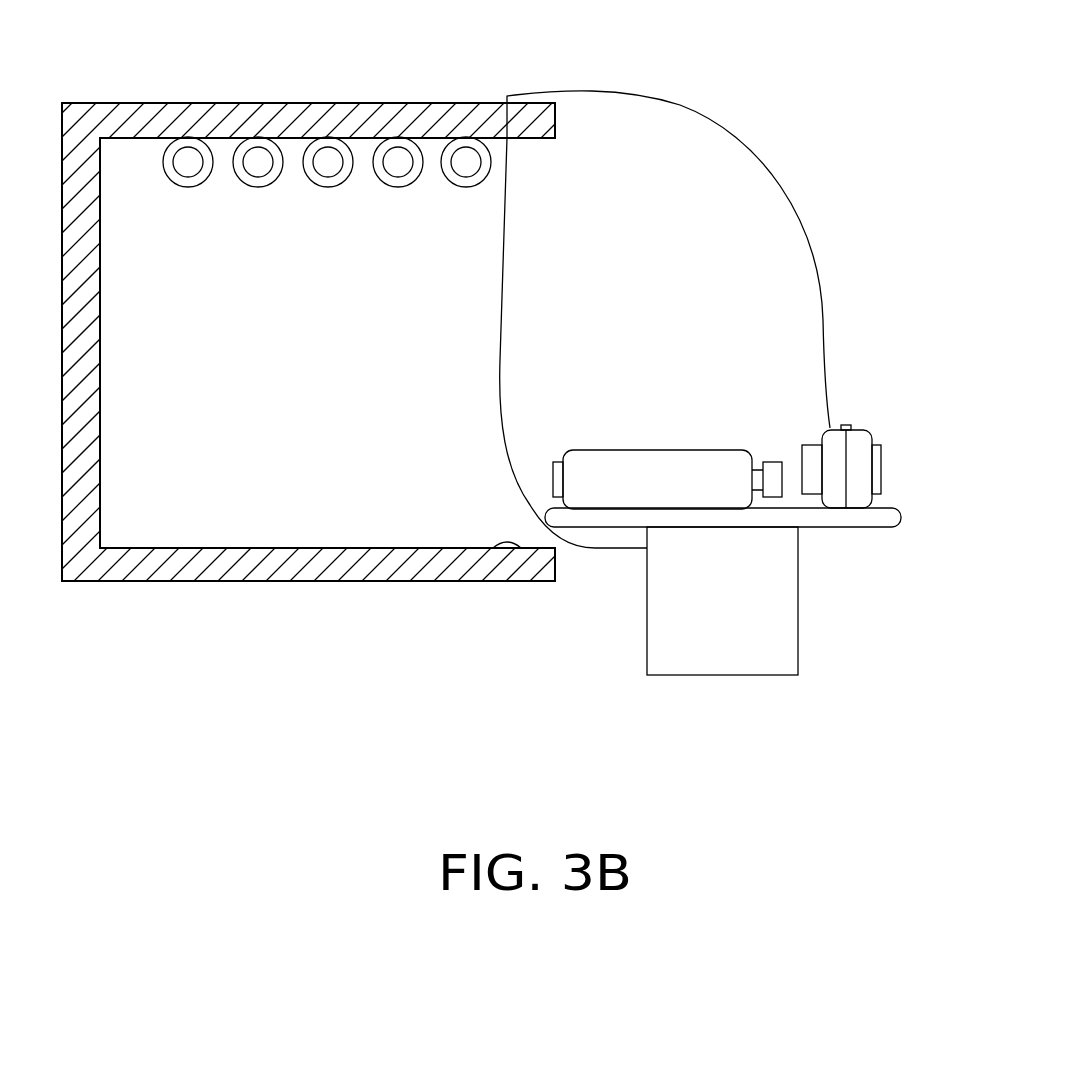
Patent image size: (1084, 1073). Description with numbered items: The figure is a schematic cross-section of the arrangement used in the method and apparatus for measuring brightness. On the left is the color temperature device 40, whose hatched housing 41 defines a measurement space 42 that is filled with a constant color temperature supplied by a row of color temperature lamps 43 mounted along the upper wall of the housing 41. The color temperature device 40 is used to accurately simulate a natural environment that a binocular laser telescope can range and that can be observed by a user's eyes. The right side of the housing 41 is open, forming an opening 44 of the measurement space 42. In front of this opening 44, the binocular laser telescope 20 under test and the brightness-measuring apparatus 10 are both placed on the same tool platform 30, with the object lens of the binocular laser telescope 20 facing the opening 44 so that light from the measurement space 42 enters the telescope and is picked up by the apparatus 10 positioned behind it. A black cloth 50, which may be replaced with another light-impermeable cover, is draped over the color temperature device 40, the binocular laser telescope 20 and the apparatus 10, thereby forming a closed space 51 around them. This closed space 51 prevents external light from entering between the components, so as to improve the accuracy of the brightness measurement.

The apparatus 10 is at (862, 436).
The binocular laser telescope 20 is at (630, 490).
The tool platform 30 is at (858, 526).
The color temperature device 40 is at (258, 98).
The housing 41 is at (477, 127).
The measurement space 42 is at (306, 345).
The color temperature lamps 43 is at (188, 160).
The opening 44 is at (492, 548).
The black cloth 50 is at (692, 178).
The closed space 51 is at (648, 338).